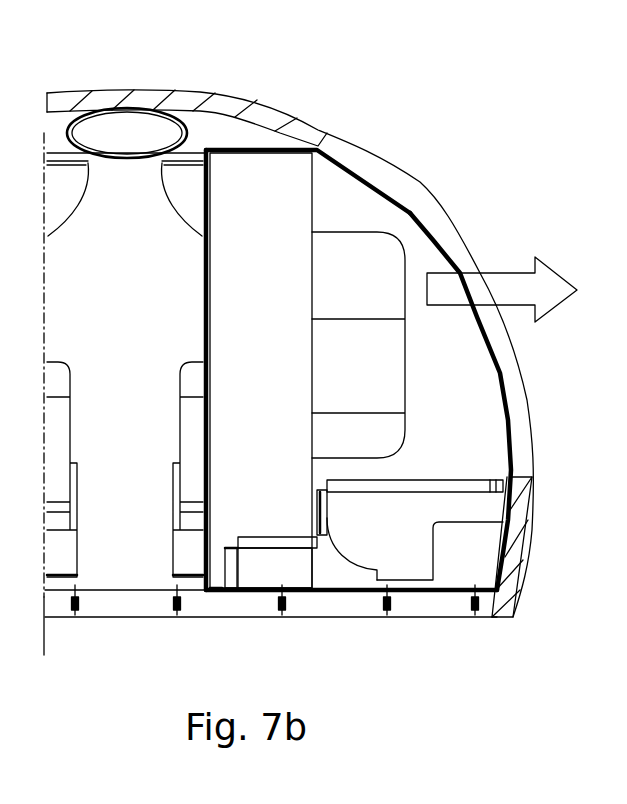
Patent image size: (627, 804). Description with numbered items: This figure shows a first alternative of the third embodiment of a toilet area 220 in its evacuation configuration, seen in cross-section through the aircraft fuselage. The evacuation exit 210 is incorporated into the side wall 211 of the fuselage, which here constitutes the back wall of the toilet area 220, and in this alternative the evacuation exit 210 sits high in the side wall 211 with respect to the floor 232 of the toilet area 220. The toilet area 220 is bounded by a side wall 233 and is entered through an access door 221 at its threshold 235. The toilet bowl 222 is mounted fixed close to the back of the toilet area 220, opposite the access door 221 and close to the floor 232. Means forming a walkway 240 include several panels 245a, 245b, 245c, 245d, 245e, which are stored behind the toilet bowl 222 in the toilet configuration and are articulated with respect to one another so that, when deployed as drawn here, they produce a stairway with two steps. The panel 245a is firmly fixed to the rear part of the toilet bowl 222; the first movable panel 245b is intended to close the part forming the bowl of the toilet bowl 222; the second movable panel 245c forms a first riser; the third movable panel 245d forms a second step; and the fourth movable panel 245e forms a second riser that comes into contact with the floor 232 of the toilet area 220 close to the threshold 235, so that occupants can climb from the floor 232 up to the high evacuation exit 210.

The evacuation exit 210 is at (520, 384).
The side wall 211 is at (518, 527).
The toilet area 220 is at (414, 640).
The access door 221 is at (258, 173).
The toilet bowl 222 is at (420, 555).
The floor 232 is at (283, 613).
The side wall of the toilet area 233 is at (328, 177).
The threshold 235 is at (217, 596).
The means forming a walkway 240 is at (466, 468).
The panel 245a is at (502, 487).
The first movable panel 245b is at (404, 482).
The second movable panel 245c is at (317, 492).
The third movable panel 245d is at (278, 542).
The fourth movable panel 245e is at (230, 562).